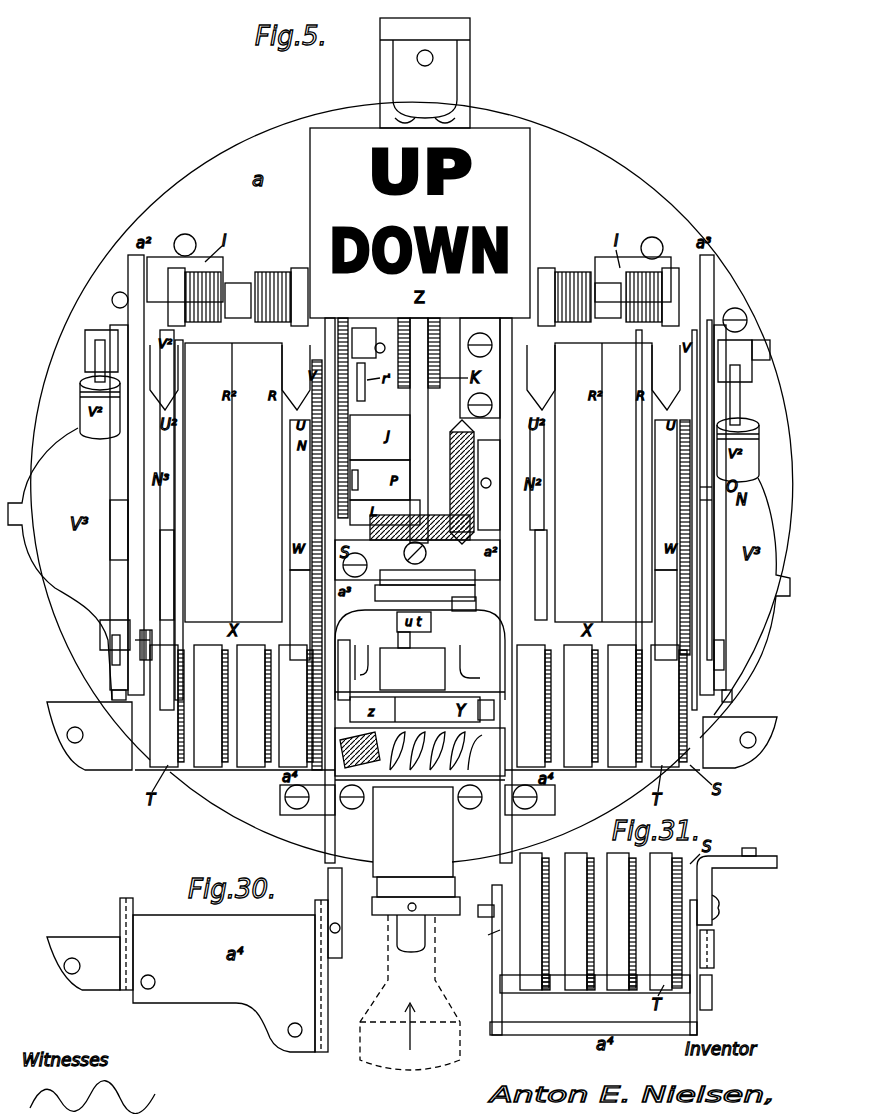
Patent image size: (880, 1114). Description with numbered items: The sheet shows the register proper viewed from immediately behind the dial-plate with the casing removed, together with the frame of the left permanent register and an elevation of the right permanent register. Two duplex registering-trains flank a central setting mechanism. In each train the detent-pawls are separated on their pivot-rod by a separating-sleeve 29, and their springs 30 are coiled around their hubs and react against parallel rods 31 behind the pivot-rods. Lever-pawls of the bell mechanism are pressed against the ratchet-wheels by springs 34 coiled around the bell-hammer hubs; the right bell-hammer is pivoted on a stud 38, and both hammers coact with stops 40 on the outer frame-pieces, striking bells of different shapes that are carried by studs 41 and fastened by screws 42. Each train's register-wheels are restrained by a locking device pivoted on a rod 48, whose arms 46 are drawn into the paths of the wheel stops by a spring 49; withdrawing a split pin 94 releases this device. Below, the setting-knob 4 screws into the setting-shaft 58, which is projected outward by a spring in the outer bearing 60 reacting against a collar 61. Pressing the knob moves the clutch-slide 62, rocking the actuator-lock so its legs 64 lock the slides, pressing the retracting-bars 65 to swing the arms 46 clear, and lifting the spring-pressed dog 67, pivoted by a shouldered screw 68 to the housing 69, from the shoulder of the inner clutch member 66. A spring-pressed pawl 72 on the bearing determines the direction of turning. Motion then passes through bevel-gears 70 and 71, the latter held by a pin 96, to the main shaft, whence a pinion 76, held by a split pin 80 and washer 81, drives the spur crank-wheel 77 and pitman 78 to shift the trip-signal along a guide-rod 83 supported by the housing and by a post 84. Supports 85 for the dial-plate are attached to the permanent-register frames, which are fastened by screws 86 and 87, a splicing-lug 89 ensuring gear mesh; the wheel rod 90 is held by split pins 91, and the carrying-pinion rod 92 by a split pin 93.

In FIG. 5, the post 84 is at (425, 73).
In FIG. 5, the stops 40 is at (116, 296).
In FIG. 5, the stud 38 is at (770, 350).
In FIG. 5, the springs 30 is at (423, 292).
In FIG. 5, the separating-sleeve 29 is at (423, 300).
In FIG. 5, the parallel rods 31 is at (418, 488).
In FIG. 5, the springs 34 is at (419, 406).
In FIG. 5, the screws 42 is at (20, 514).
In FIG. 5, the studs 41 is at (118, 518).
In FIG. 5, the pitman 78 is at (368, 343).
In FIG. 5, the spur crank-wheel 77 is at (380, 437).
In FIG. 5, the pinion 76 is at (352, 462).
In FIG. 5, the split pin 80 is at (380, 480).
In FIG. 5, the washer 81 is at (385, 514).
In FIG. 5, the guide-rod 83 is at (420, 437).
In FIG. 5, the bevel-gear 71 is at (489, 485).
In FIG. 5, the pin 96 is at (488, 491).
In FIG. 5, the housing 69 is at (366, 562).
In FIG. 5, the bevel-gear 70 is at (427, 553).
In FIG. 5, the inner clutch member 66 is at (427, 577).
In FIG. 5, the spring-pressed dog 67 is at (425, 593).
In FIG. 5, the shouldered screw 68 is at (473, 603).
In FIG. 5, the legs 64 is at (418, 621).
In FIG. 5, the screws 87 is at (391, 637).
In FIG. 5, the retracting-bars 65 is at (417, 656).
In FIG. 5, the setting-shaft 58 is at (412, 669).
In FIG. 5, the splicing-lug 89 is at (736, 672).
In FIG. 30, the splicing-lug 89 is at (330, 882).
In FIG. 31, the splicing-lug 89 is at (719, 949).
In FIG. 5, the split pin 91 is at (753, 705).
In FIG. 31, the split pin 91 is at (481, 942).
In FIG. 5, the clutch-slide 62 is at (415, 709).
In FIG. 5, the rod 90 is at (104, 700).
In FIG. 31, the rod 90 is at (478, 899).
In FIG. 5, the spring-pressed pawl 72 is at (420, 754).
In FIG. 5, the screws 86 is at (286, 800).
In FIG. 5, the outer bearing 60 is at (413, 832).
In FIG. 5, the collar 61 is at (416, 896).
In FIG. 5, the setting-knob 4 is at (410, 1008).
In FIG. 5, the arms 46 is at (413, 686).
In FIG. 5, the spring 49 is at (148, 628).
In FIG. 5, the pivot-rod 48 is at (100, 640).
In FIG. 5, the split pin 94 is at (734, 652).
In FIG. 5, the supports 85 is at (412, 736).
In FIG. 30, the supports 85 is at (99, 966).
In FIG. 31, the supports 85 is at (737, 886).
In FIG. 31, the parallel rod 92 is at (528, 985).
In FIG. 31, the split pin 93 is at (712, 1001).